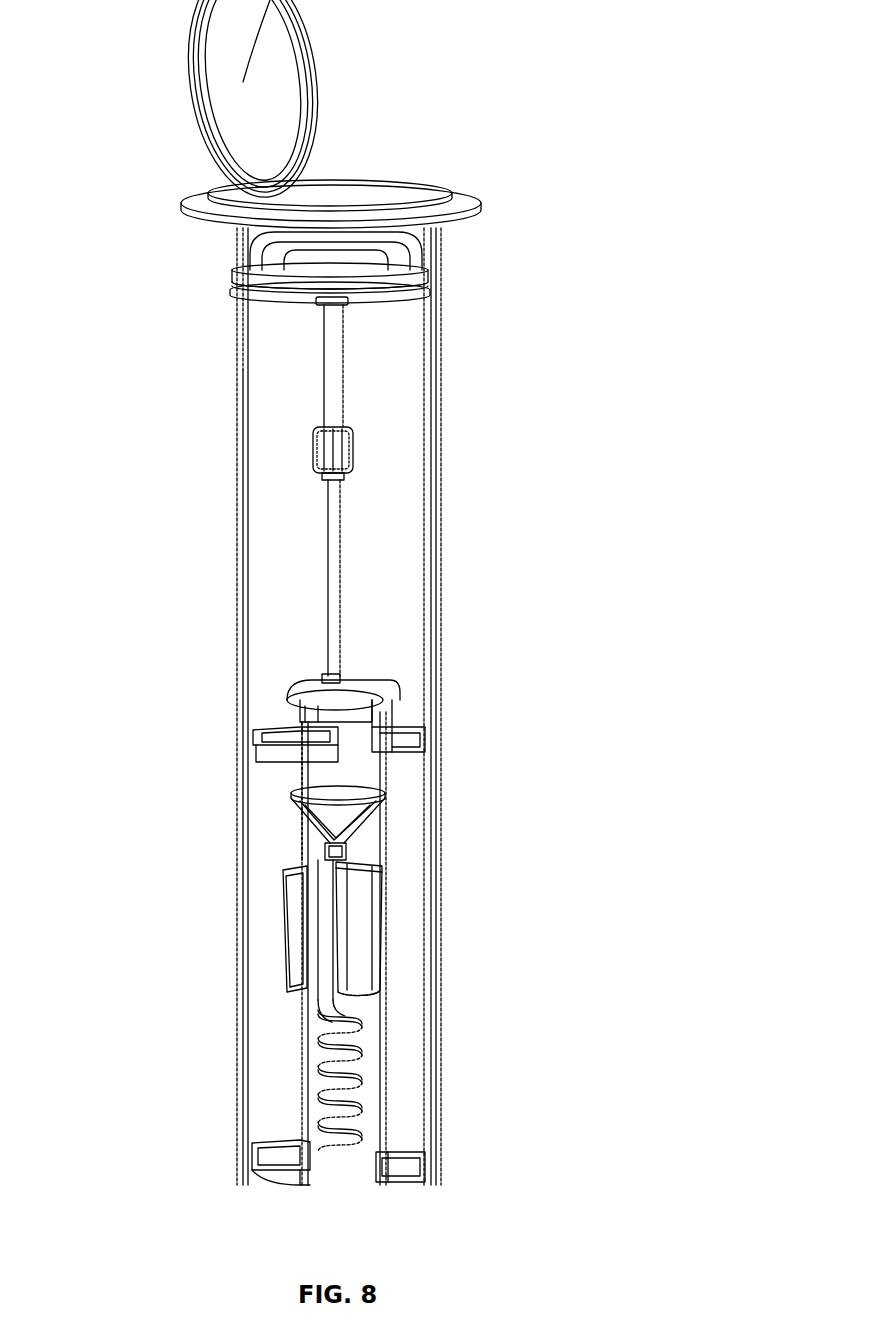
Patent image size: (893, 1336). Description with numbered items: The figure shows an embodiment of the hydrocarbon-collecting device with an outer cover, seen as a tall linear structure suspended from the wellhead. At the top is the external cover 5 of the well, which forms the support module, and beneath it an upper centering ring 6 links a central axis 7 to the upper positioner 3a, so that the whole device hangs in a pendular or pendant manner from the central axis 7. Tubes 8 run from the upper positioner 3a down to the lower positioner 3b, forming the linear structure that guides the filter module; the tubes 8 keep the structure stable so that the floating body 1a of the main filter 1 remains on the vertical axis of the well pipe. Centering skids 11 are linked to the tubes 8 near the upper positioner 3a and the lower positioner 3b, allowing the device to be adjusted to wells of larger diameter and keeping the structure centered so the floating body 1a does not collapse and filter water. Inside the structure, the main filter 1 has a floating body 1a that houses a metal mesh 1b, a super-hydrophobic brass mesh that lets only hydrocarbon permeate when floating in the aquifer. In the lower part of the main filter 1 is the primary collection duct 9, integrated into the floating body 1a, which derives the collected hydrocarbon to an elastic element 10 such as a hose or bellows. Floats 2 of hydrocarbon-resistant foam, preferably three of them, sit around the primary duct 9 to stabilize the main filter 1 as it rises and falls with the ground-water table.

The main filter 1 is at (398, 815).
The floating body 1a is at (292, 797).
The metal mesh 1b is at (318, 823).
The floats 2 is at (297, 935).
The upper positioner 3a is at (403, 720).
The lower positioner 3b is at (280, 1127).
The external cover 5 is at (217, 88).
The upper centering ring 6 is at (385, 272).
The central axis 7 is at (333, 380).
The tubes 8 is at (310, 1023).
The primary collection duct 9 is at (346, 851).
The elastic element 10 is at (358, 1080).
The centering skids 11 is at (285, 752).